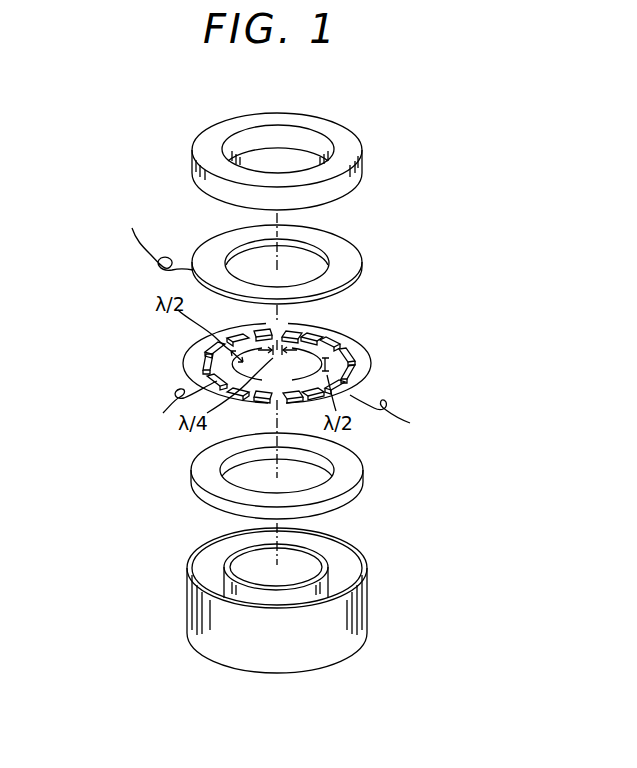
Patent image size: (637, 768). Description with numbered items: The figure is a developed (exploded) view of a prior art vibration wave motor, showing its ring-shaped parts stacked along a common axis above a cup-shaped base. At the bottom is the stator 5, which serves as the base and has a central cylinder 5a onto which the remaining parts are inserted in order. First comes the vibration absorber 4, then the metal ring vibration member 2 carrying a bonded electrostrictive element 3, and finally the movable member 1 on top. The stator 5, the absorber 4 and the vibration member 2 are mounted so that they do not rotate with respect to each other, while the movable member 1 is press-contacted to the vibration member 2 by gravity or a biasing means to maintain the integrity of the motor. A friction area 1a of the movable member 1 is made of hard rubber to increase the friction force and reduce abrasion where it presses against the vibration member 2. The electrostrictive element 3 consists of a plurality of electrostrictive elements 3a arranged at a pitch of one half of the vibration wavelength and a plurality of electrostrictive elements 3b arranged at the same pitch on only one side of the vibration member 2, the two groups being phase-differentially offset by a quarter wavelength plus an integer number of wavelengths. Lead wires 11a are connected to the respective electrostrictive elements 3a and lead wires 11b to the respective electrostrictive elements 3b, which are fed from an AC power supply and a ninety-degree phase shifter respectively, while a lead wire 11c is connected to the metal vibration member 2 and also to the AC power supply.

The movable member 1 is at (362, 156).
The friction area 1a is at (353, 197).
The metal ring vibration member 2 is at (362, 266).
The electrostrictive element 3 is at (286, 350).
The electrostrictive elements 3a is at (366, 362).
The electrostrictive elements 3b is at (207, 347).
The vibration absorber 4 is at (363, 478).
The stator 5 is at (307, 600).
The central cylinder 5a is at (327, 579).
The lead wires 11a is at (410, 423).
The lead wires 11b is at (166, 411).
The lead wire 11c is at (143, 247).